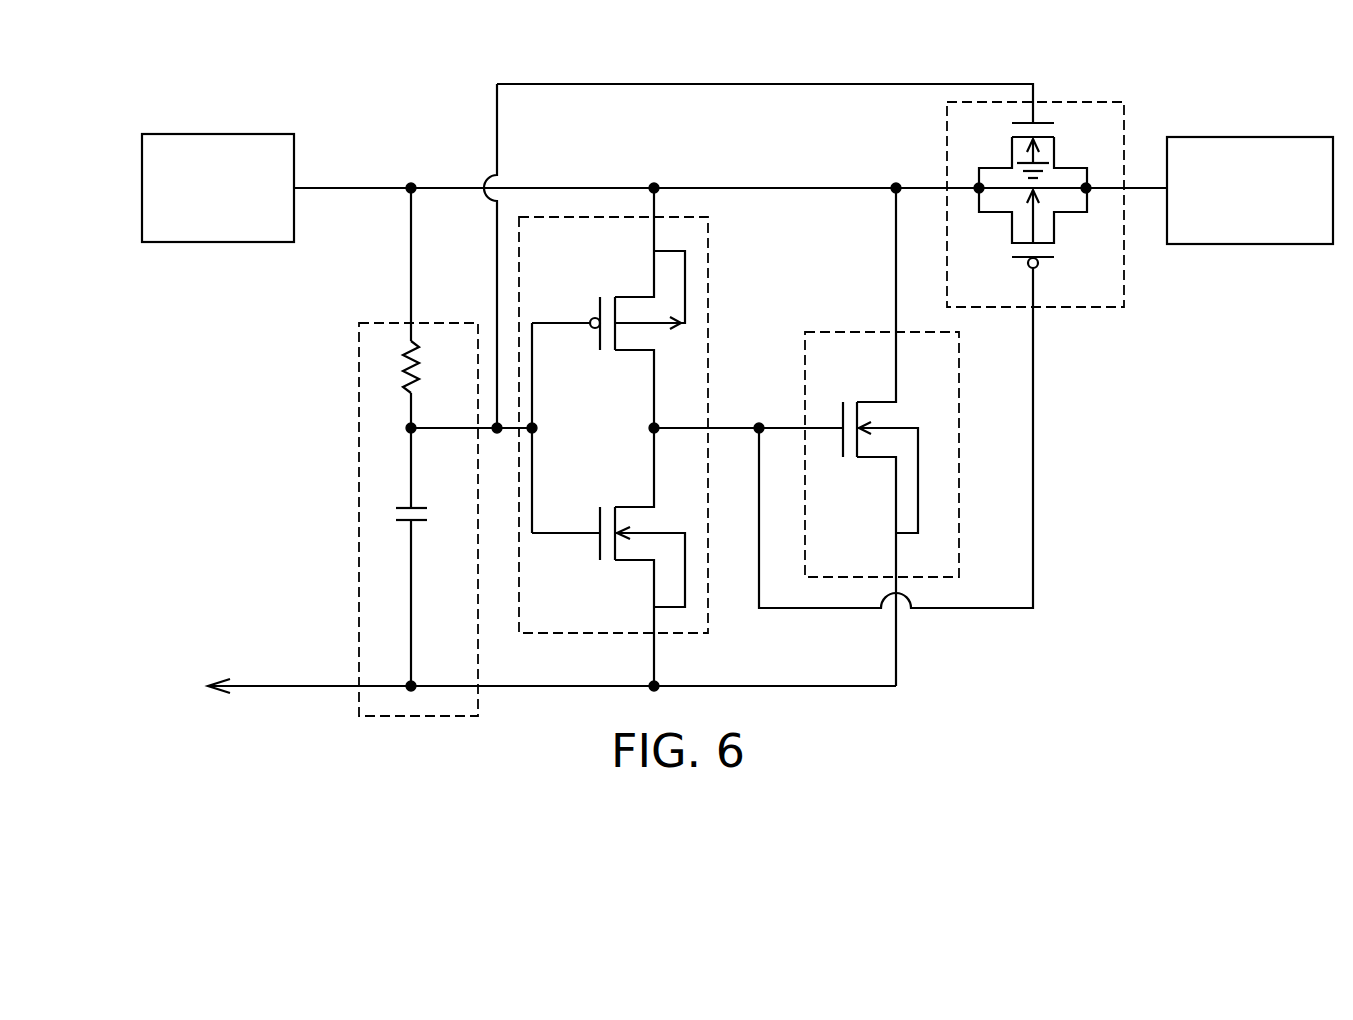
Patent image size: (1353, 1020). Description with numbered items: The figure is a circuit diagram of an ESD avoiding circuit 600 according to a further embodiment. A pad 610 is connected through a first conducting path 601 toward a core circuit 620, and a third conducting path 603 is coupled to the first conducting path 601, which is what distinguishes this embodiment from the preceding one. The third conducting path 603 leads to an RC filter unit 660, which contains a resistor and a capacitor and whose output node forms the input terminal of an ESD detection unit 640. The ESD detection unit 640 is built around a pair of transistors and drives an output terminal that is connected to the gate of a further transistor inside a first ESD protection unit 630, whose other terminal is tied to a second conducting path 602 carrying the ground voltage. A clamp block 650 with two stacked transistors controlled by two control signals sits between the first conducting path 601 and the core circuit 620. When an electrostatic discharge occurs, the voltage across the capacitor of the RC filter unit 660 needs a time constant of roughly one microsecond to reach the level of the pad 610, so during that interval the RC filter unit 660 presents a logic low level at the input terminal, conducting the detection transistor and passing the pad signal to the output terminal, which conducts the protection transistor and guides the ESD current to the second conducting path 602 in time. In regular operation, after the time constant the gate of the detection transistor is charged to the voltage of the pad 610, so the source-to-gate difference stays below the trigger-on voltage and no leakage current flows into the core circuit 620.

The ESD avoiding circuit 600 is at (1157, 692).
The first conducting path 601 is at (378, 188).
The second conducting path 602 is at (282, 686).
The third conducting path 603 is at (411, 263).
The pad 610 is at (190, 134).
The core circuit 620 is at (1250, 137).
The first ESD protection unit 630 is at (959, 423).
The ESD detection unit 640 is at (708, 242).
The clamp unit 650 is at (1124, 125).
The RC filter unit 660 is at (452, 323).